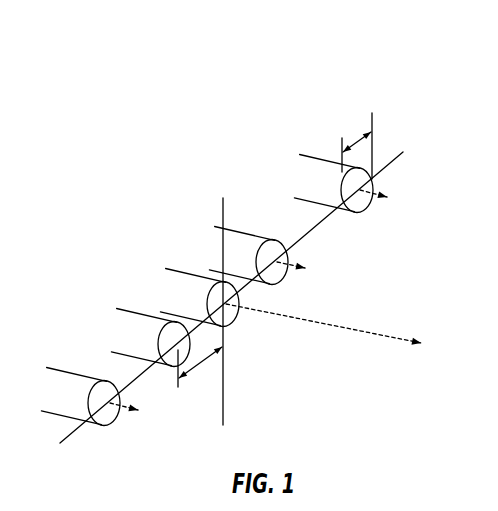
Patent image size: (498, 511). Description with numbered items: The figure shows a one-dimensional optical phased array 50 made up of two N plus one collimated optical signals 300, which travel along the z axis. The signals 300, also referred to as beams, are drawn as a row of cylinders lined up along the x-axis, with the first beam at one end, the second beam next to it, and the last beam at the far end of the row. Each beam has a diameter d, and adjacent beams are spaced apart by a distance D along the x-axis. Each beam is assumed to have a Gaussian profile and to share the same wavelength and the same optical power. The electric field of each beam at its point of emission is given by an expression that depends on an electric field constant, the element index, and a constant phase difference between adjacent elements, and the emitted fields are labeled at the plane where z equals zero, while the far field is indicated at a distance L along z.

The one-dimensional optical phased array 50 is at (428, 78).
The collimated optical signals 300 is at (189, 280).